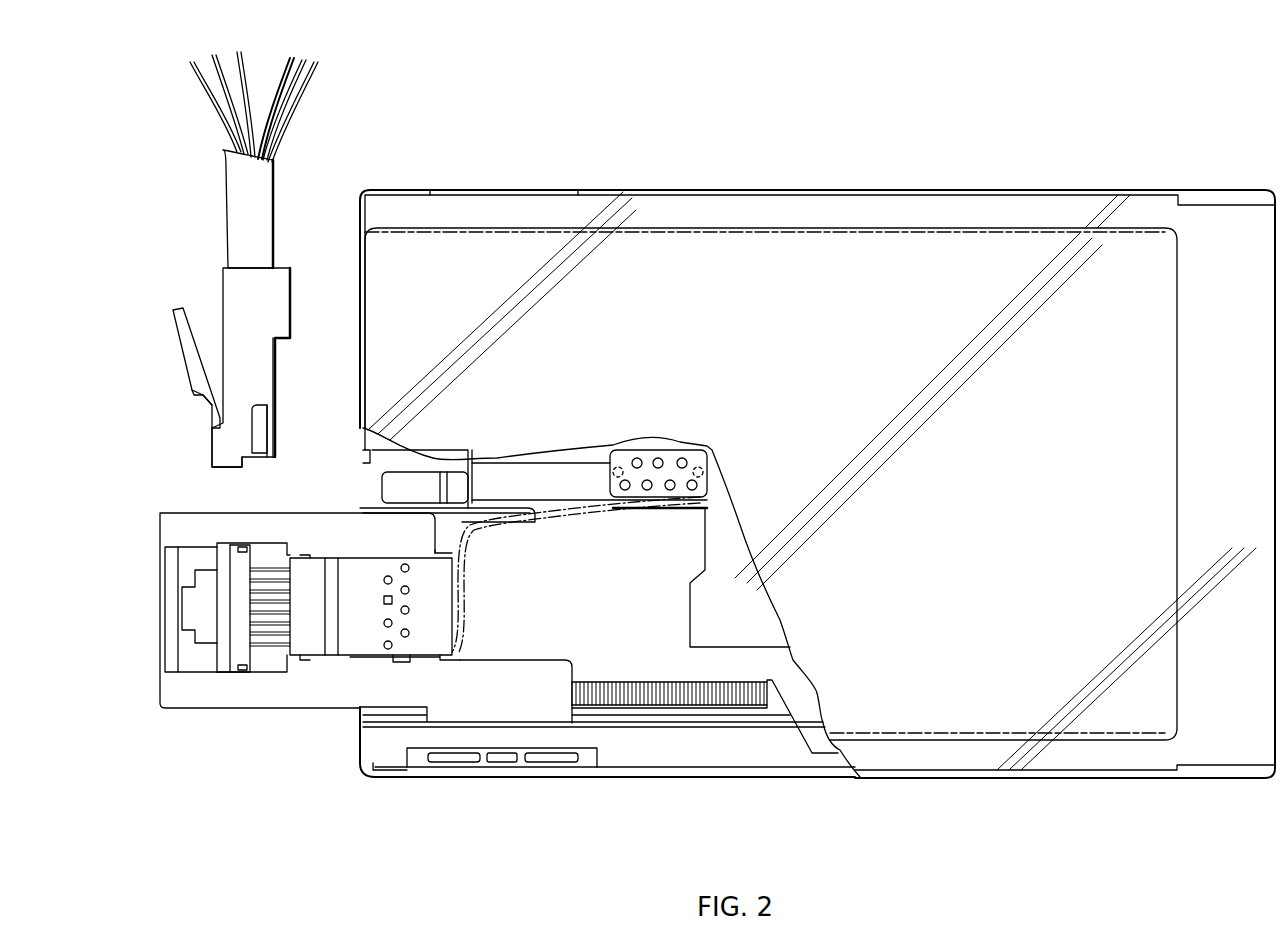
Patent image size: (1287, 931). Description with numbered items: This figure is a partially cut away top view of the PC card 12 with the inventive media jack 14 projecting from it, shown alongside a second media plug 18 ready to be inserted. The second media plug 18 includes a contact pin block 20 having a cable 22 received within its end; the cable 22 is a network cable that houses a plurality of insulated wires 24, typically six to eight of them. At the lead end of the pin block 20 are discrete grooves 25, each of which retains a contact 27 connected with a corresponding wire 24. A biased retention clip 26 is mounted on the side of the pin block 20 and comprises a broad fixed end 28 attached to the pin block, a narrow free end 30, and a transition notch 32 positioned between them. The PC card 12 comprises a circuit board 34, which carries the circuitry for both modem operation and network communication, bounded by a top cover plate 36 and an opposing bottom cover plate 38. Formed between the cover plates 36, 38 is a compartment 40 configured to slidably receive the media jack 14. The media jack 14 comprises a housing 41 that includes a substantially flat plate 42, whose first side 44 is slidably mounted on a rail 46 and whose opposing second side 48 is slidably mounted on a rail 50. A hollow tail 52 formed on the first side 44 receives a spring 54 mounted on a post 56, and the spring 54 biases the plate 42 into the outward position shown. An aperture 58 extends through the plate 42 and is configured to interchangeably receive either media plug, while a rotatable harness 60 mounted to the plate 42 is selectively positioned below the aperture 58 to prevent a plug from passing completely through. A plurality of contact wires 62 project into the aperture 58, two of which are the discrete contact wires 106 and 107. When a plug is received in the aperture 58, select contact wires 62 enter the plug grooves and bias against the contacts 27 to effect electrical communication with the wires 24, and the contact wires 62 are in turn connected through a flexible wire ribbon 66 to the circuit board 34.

The PC card 12 is at (822, 165).
The media jack 14 is at (293, 738).
The second media plug 18 is at (318, 244).
The contact pin block 20 is at (237, 298).
The cable 22 is at (240, 208).
The insulated wires 24 is at (250, 108).
The grooves 25 is at (277, 445).
The biased retention clip 26 is at (170, 385).
The contact 27 is at (268, 418).
The broad fixed end 28 is at (215, 450).
The narrow free end 30 is at (182, 326).
The transition notch 32 is at (192, 392).
The circuit board 34 is at (750, 600).
The top cover plate 36 is at (930, 705).
The bottom cover plate 38 is at (597, 640).
The compartment 40 is at (657, 537).
The housing 41 is at (207, 690).
The plate 42 is at (265, 688).
The first side 44 is at (468, 712).
The rail 46 is at (670, 718).
The second side 48 is at (403, 530).
The rail 50 is at (493, 517).
The hollow tail 52 is at (480, 675).
The spring 54 is at (655, 675).
The post 56 is at (733, 703).
The aperture 58 is at (200, 600).
The rotatable harness 60 is at (225, 650).
The contact wires 62 is at (268, 570).
The flexible wire ribbon 66 is at (470, 533).
The discrete contact wire 106 is at (258, 612).
The discrete contact wire 107 is at (257, 600).